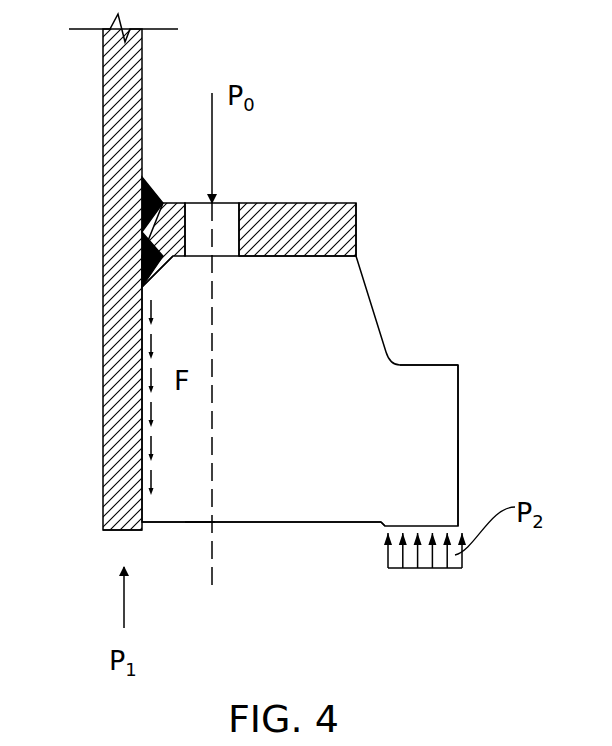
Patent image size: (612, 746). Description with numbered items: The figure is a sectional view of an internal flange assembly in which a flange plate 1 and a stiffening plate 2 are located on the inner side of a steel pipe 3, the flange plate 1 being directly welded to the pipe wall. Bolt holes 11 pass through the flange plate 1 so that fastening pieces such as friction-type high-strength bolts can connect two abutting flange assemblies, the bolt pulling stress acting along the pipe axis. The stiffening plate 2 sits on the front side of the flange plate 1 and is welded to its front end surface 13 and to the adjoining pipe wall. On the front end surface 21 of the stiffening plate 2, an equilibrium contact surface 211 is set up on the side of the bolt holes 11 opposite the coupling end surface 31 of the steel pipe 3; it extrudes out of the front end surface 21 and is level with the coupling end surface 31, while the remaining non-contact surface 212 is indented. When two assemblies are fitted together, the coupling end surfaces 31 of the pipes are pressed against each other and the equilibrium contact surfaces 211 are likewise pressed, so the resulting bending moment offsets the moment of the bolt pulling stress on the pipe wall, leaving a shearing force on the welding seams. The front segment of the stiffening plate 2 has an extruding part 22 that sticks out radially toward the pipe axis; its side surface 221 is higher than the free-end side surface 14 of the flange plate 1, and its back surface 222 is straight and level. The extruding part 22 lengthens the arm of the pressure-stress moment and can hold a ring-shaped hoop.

The flange plate 1 is at (333, 228).
The bolt holes 11 is at (235, 220).
The front end surface of flange plate 13 is at (331, 258).
The free-end side surface 14 is at (356, 245).
The stiffening plate 2 is at (353, 347).
The front end surface of stiffening plate 21 is at (280, 533).
The equilibrium contact surface 211 is at (423, 520).
The non-contact surface 212 is at (197, 522).
The extruding part 22 is at (438, 425).
The side surface of extruding part 221 is at (458, 470).
The back surface of extruding part 222 is at (436, 365).
The steel pipe 3 is at (103, 290).
The coupling end surface 31 is at (120, 530).